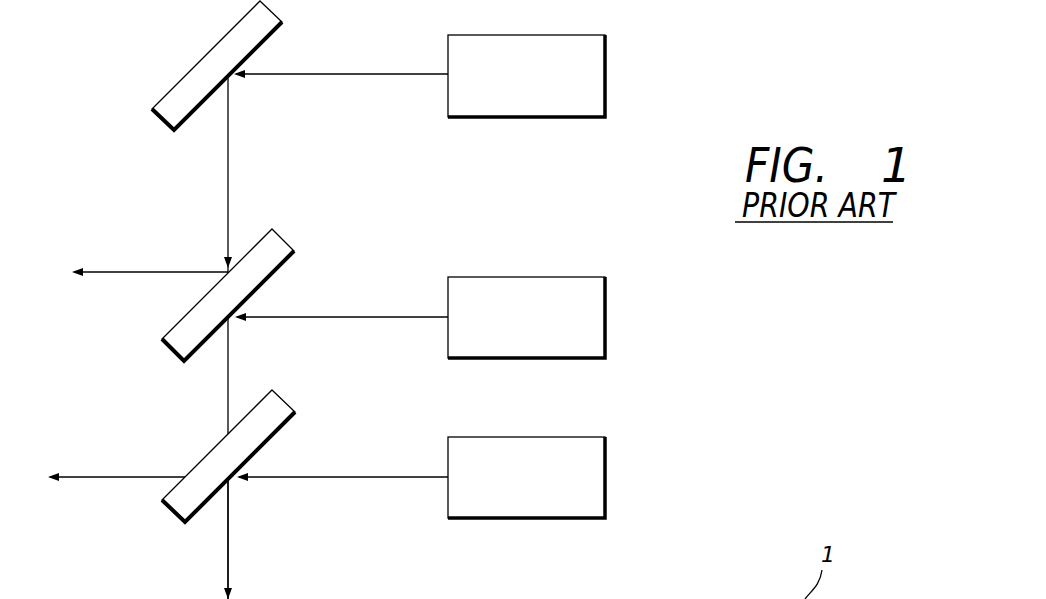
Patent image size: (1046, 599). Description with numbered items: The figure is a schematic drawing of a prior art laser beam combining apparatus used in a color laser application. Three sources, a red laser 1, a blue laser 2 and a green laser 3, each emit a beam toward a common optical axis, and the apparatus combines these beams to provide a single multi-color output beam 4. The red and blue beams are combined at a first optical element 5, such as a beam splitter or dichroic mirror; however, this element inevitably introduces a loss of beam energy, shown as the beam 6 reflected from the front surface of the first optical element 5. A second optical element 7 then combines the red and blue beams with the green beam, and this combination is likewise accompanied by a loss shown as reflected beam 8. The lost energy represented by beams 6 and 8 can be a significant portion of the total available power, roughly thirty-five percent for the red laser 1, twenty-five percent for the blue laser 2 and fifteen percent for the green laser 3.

The red laser 1 is at (605, 73).
The blue laser 2 is at (605, 312).
The green laser 3 is at (605, 480).
The multi-color output beam 4 is at (80, 477).
The first optical element 5 is at (288, 240).
The reflected loss beam 6 is at (115, 272).
The second optical element 7 is at (283, 402).
The reflected loss beam 8 is at (228, 575).